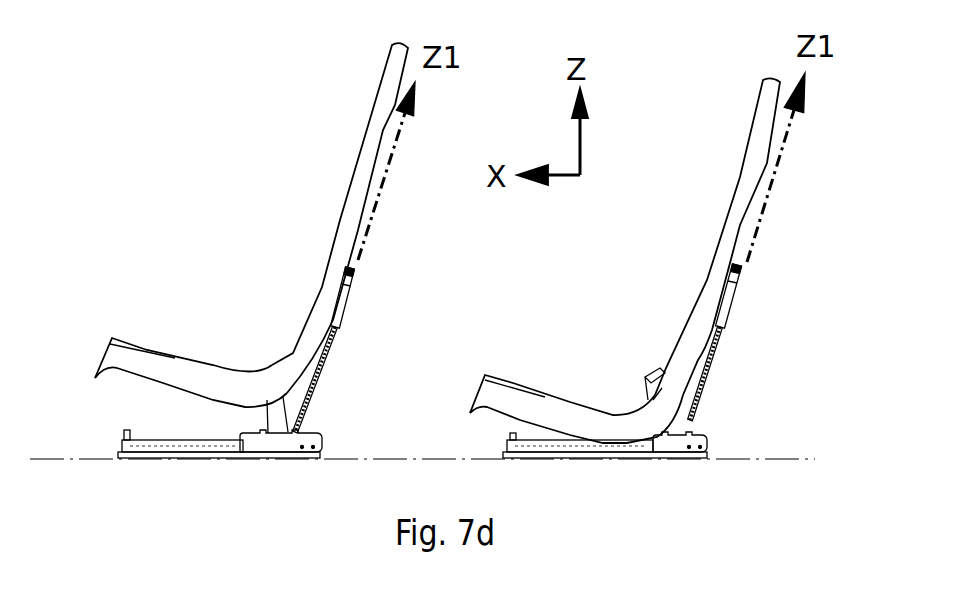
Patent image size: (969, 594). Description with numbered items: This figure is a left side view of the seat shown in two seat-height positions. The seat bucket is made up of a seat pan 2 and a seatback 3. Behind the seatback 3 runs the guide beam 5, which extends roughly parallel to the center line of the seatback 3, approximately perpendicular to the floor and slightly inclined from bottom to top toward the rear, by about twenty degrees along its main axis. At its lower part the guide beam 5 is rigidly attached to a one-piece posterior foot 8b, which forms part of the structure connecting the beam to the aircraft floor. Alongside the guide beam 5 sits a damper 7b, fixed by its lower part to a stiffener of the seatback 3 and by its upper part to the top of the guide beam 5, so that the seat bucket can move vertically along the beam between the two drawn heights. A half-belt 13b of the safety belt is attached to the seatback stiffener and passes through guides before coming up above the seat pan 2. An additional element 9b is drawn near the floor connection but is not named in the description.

The seat pan 2 is at (177, 368).
The seatback 3 is at (352, 205).
The guide beam 5 is at (328, 367).
The damper 7b is at (355, 295).
The one-piece posterior foot 8b is at (307, 460).
The seat rail 9b is at (152, 448).
The half-belt 13b is at (293, 433).